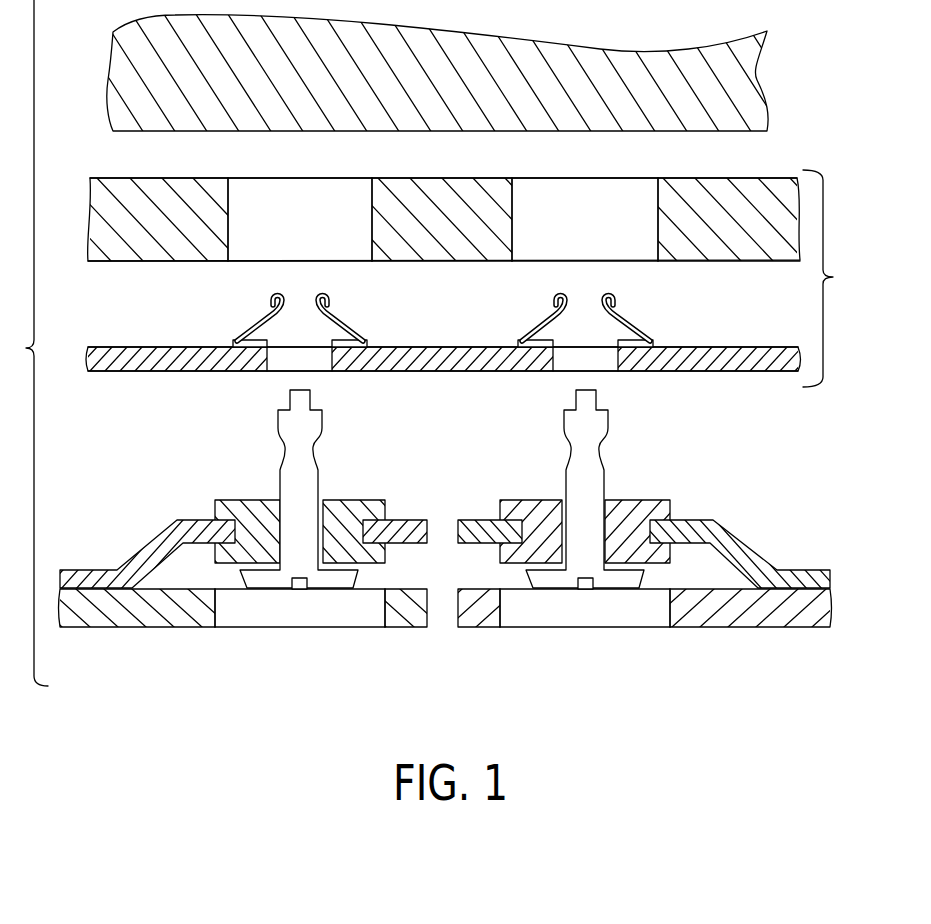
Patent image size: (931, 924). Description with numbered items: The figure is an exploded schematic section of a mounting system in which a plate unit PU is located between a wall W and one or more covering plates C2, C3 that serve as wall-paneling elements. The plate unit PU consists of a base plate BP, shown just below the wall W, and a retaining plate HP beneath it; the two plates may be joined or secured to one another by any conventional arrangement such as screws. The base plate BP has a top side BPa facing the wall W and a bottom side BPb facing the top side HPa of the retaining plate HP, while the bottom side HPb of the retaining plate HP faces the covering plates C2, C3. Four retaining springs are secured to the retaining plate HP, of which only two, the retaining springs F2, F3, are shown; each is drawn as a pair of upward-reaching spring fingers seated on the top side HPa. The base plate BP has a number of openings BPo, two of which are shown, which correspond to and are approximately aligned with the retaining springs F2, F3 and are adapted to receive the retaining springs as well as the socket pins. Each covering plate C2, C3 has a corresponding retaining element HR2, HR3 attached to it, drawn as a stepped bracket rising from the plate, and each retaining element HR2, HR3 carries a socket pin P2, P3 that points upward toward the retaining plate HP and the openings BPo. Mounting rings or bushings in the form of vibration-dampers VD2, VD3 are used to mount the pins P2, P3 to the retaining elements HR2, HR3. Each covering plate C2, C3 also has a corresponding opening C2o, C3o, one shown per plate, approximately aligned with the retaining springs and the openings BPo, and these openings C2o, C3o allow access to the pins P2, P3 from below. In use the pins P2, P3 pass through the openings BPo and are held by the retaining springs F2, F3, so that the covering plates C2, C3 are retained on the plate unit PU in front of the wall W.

The wall W is at (742, 86).
The base plate BP is at (730, 202).
The top side of base plate BPa is at (153, 178).
The bottom side of base plate BPb is at (152, 263).
The openings of base plate BPo is at (293, 203).
The plate unit PU is at (835, 278).
The retaining plate HP is at (767, 360).
The top side of retaining plate HPa is at (153, 348).
The bottom side of retaining plate HPb is at (153, 372).
The retaining spring F3 is at (343, 320).
The retaining spring F2 is at (628, 320).
The socket pin P3 is at (292, 477).
The socket pin P2 is at (592, 472).
The vibration-damper VD3 is at (352, 498).
The vibration-damper VD2 is at (533, 498).
The retaining element HR3 is at (193, 528).
The retaining element HR2 is at (693, 528).
The covering plate C3 is at (152, 617).
The covering plate C2 is at (747, 617).
The opening of covering plate C3o is at (302, 617).
The opening of covering plate C2o is at (592, 617).